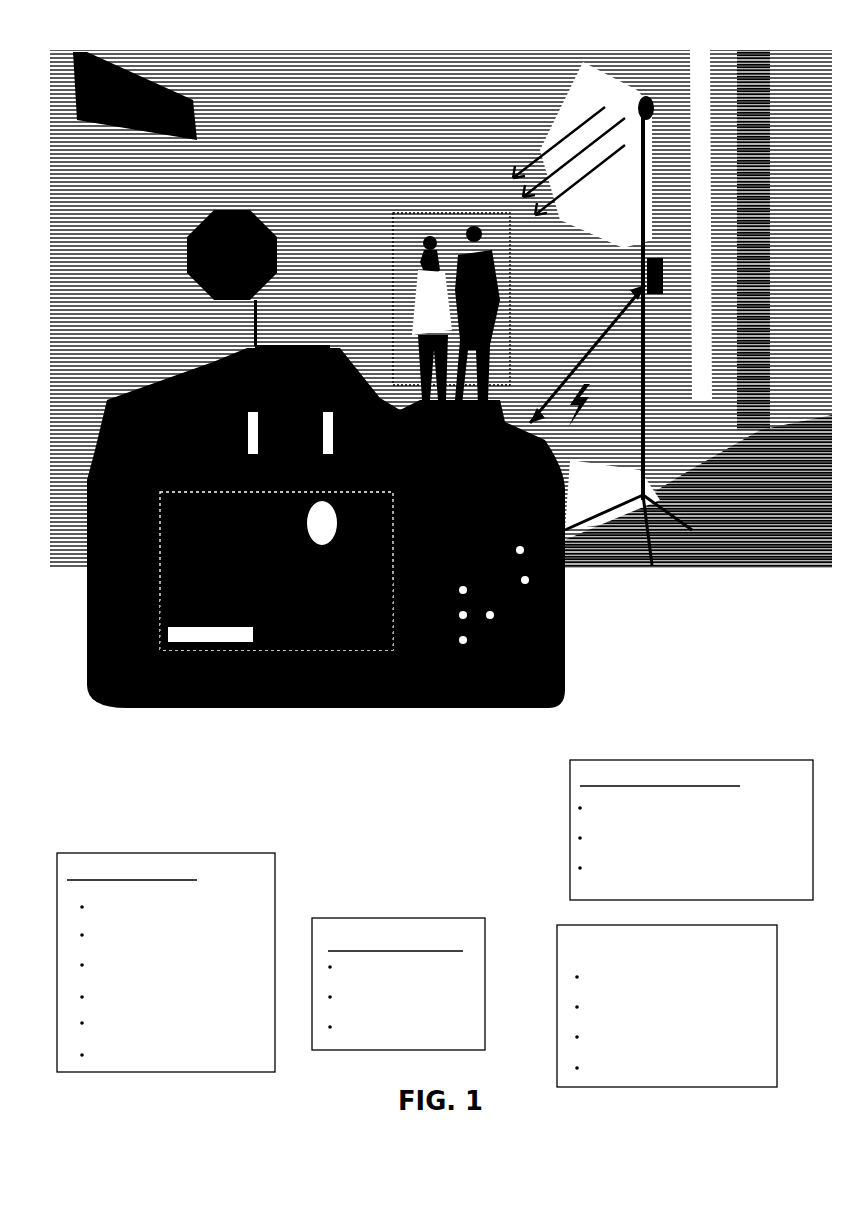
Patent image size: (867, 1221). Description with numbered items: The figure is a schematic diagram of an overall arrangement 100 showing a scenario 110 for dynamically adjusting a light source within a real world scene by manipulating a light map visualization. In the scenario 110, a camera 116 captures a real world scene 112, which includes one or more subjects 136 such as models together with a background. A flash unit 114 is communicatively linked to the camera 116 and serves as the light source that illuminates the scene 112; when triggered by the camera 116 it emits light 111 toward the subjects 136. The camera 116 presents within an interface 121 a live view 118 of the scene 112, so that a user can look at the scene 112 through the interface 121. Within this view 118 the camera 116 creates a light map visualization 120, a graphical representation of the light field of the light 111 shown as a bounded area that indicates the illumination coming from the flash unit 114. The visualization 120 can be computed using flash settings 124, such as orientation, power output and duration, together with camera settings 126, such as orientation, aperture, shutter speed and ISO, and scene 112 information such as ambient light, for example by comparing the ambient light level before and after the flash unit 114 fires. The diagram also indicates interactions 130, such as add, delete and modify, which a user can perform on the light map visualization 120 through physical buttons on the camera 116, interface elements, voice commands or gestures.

The system 100 is at (838, 25).
The scenario 110 is at (140, 35).
The light 111 is at (578, 128).
The real world scene 112 is at (707, 600).
The flash unit 114 is at (723, 96).
The camera 116 is at (567, 643).
The view 118 is at (257, 647).
The light map visualization 120 is at (280, 643).
The interface 121 is at (368, 652).
The flash settings 124 is at (582, 418).
The camera settings 126 is at (747, 956).
The interactions 130 is at (463, 578).
The subjects 136 is at (470, 212).